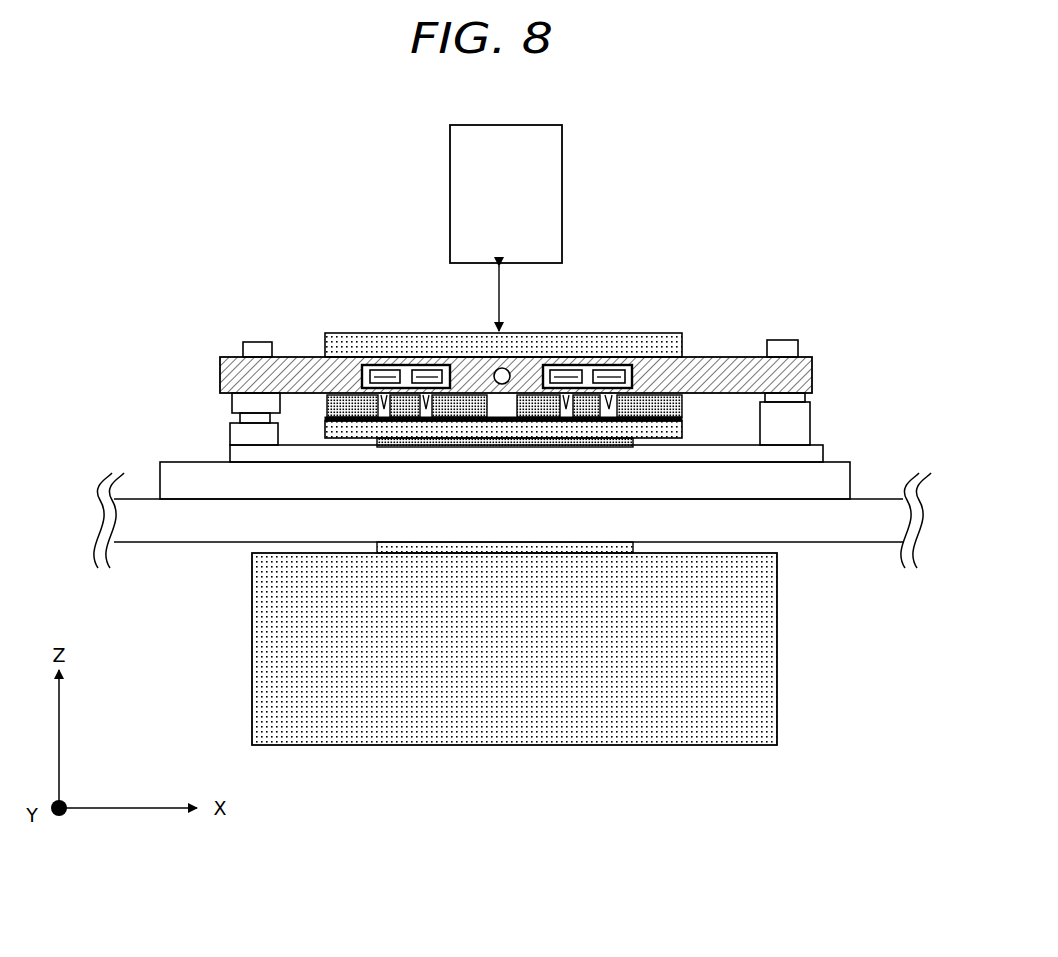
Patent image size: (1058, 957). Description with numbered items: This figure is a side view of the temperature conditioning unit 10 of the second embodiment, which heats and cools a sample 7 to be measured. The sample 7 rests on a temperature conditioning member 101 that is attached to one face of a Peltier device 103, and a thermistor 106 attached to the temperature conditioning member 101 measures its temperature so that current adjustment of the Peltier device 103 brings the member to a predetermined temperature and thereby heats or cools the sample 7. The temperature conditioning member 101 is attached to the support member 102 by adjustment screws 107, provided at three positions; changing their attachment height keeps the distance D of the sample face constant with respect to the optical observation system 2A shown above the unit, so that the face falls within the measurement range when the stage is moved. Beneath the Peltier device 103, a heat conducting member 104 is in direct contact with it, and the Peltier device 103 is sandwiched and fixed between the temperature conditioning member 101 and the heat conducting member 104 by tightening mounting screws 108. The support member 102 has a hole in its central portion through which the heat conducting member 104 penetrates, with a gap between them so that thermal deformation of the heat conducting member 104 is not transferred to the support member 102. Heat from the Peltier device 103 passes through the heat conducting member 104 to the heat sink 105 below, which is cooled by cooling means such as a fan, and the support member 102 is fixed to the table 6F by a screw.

The temperature conditioning unit 10 is at (315, 245).
The optical observation system 2A is at (550, 188).
The distance D is at (485, 298).
The sample 7 is at (650, 342).
The temperature conditioning member 101 is at (300, 372).
The support member 102 is at (207, 475).
The Peltier device 103 is at (350, 400).
The heat conducting member 104 is at (580, 447).
The heat sink 105 is at (575, 733).
The thermistor 106 is at (504, 368).
The adjustment screw 107 is at (253, 410).
The mounting screw 108 is at (388, 372).
The table 6F is at (197, 530).